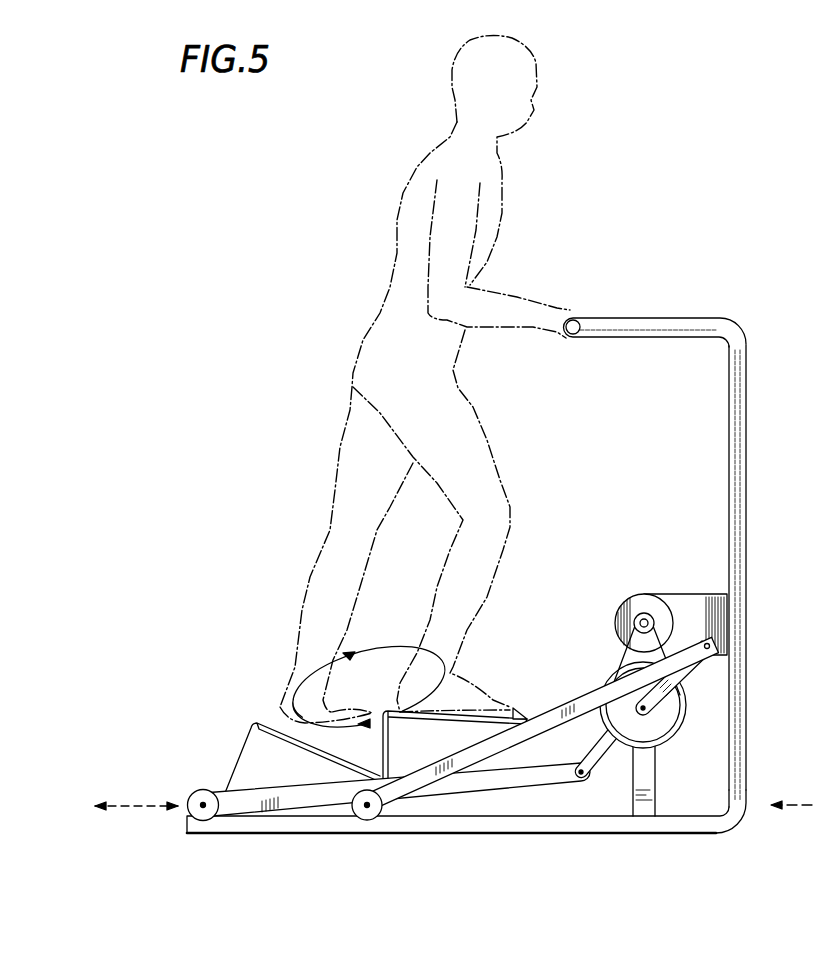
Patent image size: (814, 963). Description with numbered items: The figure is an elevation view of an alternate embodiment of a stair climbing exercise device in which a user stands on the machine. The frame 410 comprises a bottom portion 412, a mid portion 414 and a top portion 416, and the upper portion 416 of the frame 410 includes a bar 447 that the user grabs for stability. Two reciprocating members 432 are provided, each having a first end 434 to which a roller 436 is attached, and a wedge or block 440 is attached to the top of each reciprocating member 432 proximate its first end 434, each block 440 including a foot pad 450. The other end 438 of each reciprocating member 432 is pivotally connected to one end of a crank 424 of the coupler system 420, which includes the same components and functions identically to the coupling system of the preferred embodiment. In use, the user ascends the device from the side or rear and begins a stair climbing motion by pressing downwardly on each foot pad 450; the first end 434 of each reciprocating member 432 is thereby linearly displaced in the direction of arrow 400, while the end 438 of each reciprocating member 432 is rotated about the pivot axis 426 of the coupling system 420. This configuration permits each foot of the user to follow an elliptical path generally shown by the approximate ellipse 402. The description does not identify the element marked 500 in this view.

The arrow 400 is at (141, 804).
The approximate ellipse 402 is at (312, 667).
The frame 410 is at (748, 482).
The bottom portion 412 is at (600, 834).
The mid portion 414 is at (745, 412).
The top portion 416 is at (680, 317).
The coupler system 420 is at (687, 727).
The crank 424 is at (683, 670).
The pivot axis 426 is at (648, 712).
The reciprocating member 432 is at (305, 796).
The first end 434 is at (230, 803).
The roller 436 is at (200, 790).
The other end 438 is at (706, 636).
The wedge or block 440 is at (260, 746).
The bar 447 is at (574, 312).
The foot pad 450 is at (500, 706).
The user orientation arrow 500 is at (809, 808).